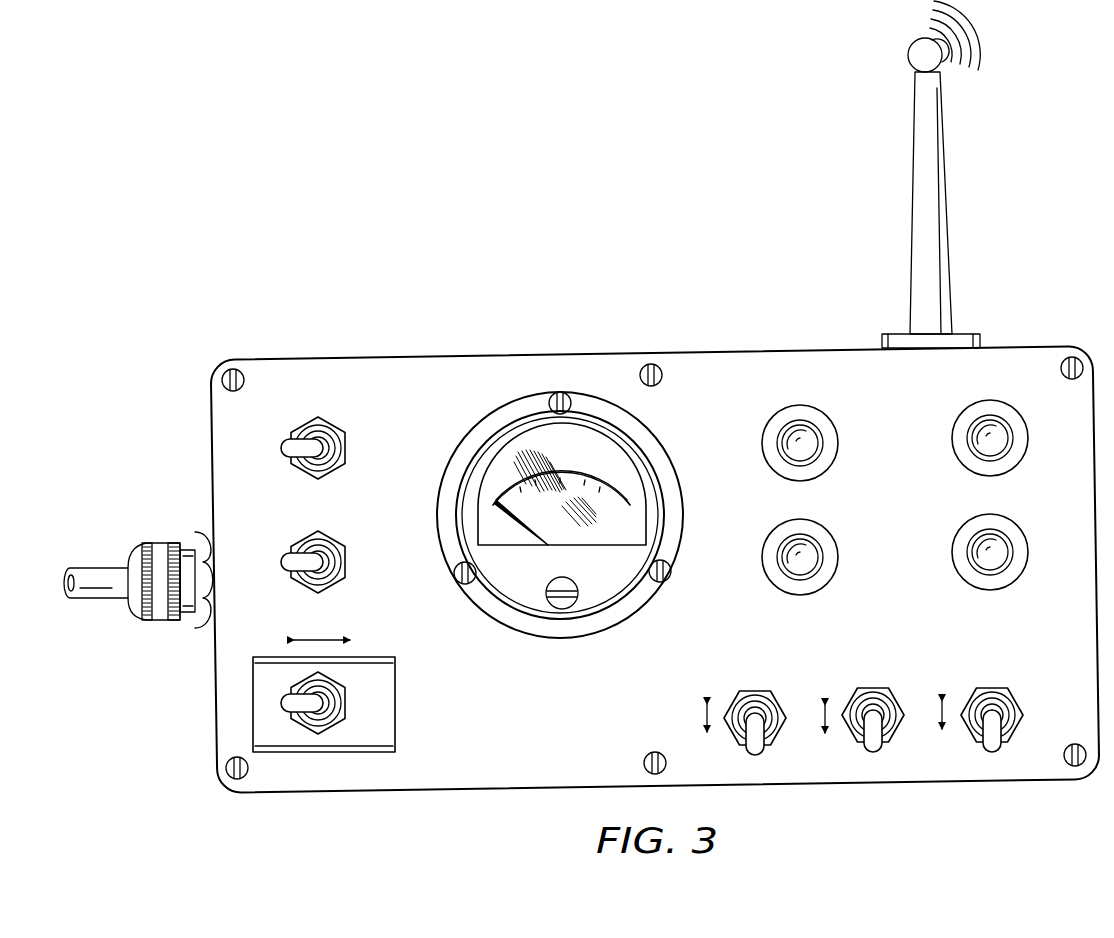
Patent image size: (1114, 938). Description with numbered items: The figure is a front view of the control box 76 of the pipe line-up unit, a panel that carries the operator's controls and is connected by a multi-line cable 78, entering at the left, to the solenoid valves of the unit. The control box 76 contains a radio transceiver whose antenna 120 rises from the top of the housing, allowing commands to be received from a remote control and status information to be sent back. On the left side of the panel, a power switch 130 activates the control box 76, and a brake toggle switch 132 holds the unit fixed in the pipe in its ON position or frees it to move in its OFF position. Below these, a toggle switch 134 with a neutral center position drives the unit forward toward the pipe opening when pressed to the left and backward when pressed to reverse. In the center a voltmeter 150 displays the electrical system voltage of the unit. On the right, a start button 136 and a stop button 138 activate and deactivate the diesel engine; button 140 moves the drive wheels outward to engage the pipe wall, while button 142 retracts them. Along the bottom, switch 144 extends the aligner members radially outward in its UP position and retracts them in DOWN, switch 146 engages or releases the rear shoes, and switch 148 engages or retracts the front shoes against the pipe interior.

The control box 76 is at (477, 229).
The multi-line cable 78 is at (100, 598).
The antenna 120 is at (947, 203).
The power switch 130 is at (292, 455).
The toggle switch 132 is at (292, 570).
The toggle switch 134 is at (345, 703).
The start button 136 is at (797, 405).
The stop button 138 is at (762, 557).
The button 140 is at (955, 573).
The button 142 is at (988, 401).
The switch 144 is at (757, 757).
The switch 146 is at (873, 753).
The switch 148 is at (992, 753).
The voltmeter 150 is at (563, 640).